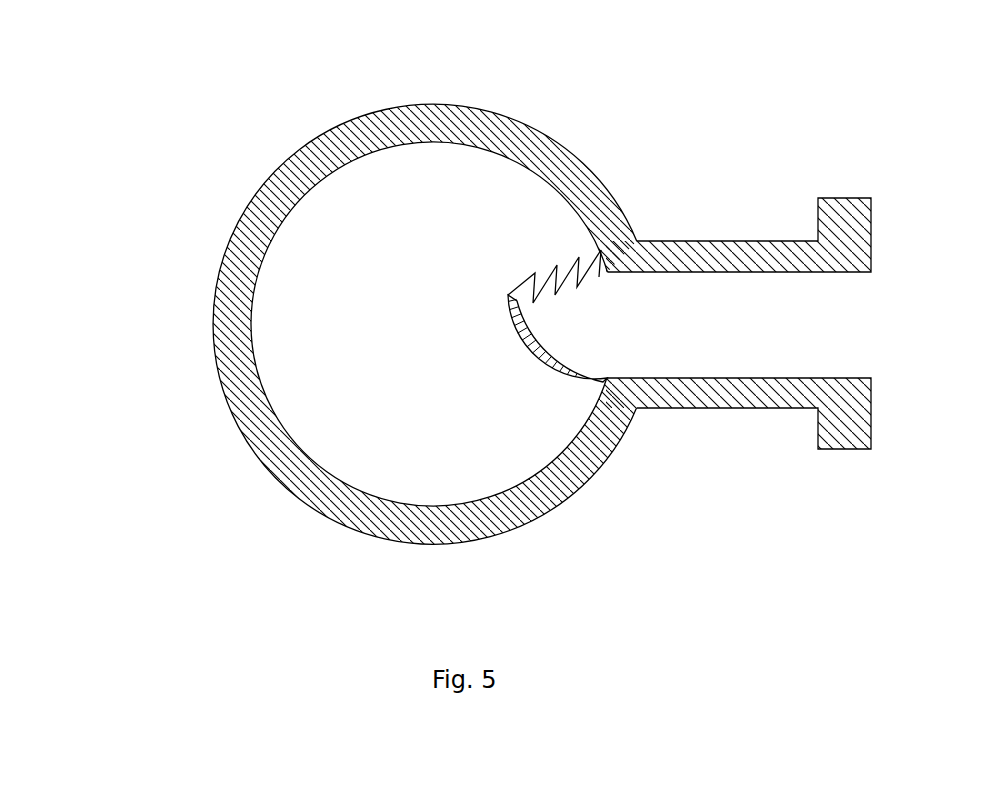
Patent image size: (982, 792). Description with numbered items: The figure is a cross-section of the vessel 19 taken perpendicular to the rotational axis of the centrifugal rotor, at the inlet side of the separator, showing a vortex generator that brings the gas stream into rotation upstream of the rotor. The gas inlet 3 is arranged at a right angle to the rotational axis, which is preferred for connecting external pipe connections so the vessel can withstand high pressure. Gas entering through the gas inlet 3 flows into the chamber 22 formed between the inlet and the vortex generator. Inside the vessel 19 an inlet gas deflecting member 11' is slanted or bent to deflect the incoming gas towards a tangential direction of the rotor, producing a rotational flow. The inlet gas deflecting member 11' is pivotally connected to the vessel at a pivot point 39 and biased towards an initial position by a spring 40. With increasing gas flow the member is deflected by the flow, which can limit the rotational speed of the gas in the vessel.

The gas inlet 3 is at (650, 332).
The vessel 19 is at (225, 322).
The chamber 22 is at (335, 294).
The pivot point 39 is at (607, 380).
The spring 40 is at (600, 253).
The inlet gas deflecting member 11' is at (630, 460).